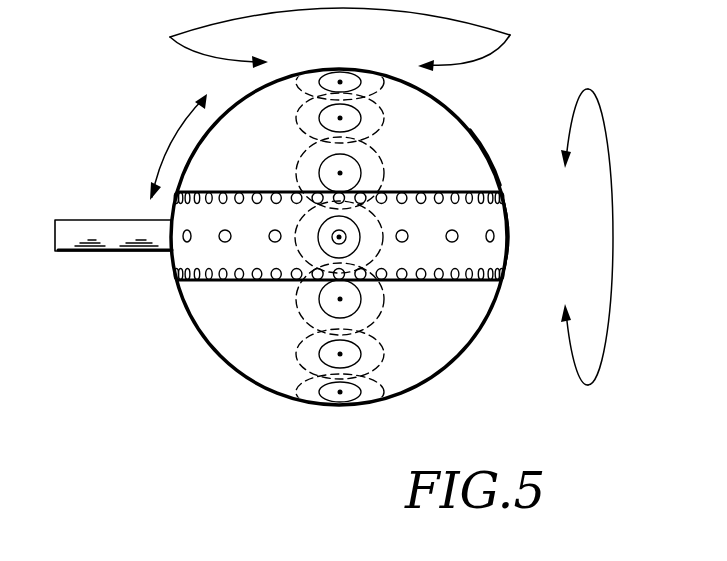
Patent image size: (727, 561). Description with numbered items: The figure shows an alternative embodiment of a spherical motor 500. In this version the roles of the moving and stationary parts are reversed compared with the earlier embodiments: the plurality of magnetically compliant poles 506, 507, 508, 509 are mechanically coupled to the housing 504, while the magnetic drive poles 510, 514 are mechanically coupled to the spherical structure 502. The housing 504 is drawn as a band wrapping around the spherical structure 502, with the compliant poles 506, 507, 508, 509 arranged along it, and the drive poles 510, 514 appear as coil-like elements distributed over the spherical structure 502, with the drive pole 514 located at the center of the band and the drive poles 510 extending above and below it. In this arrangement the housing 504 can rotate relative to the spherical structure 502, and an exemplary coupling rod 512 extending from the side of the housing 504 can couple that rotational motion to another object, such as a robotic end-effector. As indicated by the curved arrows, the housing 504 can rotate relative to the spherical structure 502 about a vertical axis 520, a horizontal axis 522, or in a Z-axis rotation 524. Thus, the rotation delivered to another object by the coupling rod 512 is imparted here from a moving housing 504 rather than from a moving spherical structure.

The spherical motor 500 is at (154, 43).
The spherical structure 502 is at (255, 383).
The housing 504 is at (205, 283).
The magnetically compliant pole 506 is at (495, 237).
The magnetically compliant pole 507 is at (457, 241).
The magnetically compliant pole 508 is at (498, 190).
The magnetically compliant pole 509 is at (505, 193).
The magnetic drive pole 510 is at (378, 138).
The coupling rod 512 is at (108, 220).
The magnetic drive pole 514 is at (360, 237).
The vertical axis 520 is at (607, 137).
The horizontal axis 522 is at (512, 37).
The Z-axis rotation 524 is at (175, 133).